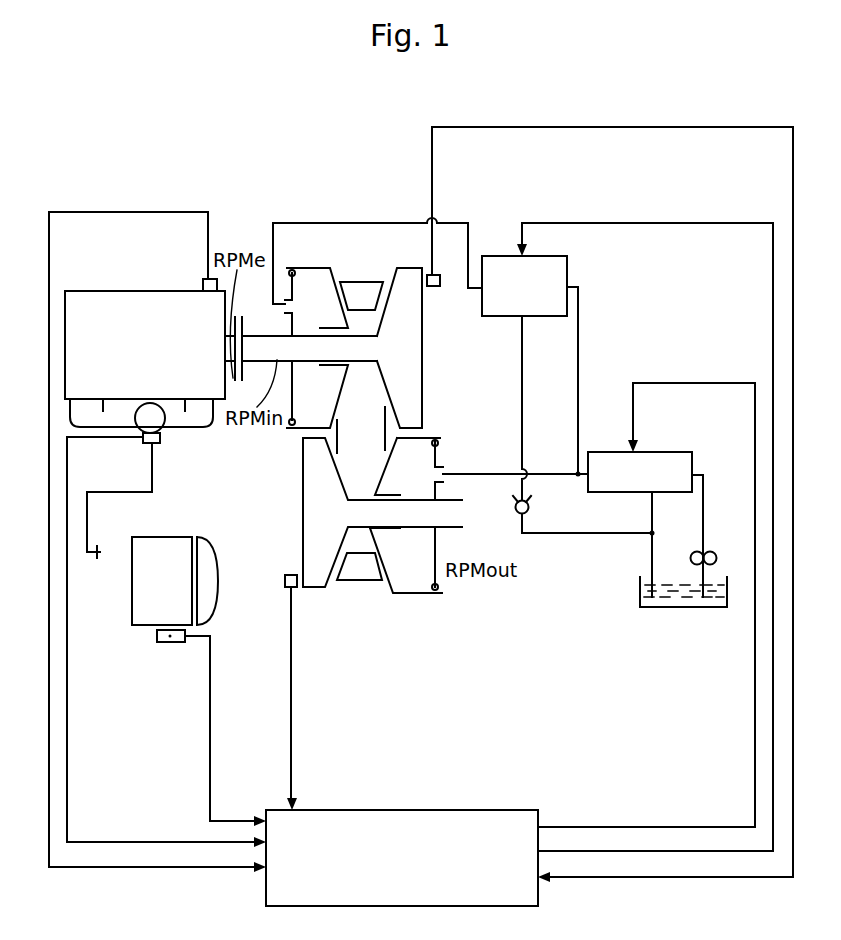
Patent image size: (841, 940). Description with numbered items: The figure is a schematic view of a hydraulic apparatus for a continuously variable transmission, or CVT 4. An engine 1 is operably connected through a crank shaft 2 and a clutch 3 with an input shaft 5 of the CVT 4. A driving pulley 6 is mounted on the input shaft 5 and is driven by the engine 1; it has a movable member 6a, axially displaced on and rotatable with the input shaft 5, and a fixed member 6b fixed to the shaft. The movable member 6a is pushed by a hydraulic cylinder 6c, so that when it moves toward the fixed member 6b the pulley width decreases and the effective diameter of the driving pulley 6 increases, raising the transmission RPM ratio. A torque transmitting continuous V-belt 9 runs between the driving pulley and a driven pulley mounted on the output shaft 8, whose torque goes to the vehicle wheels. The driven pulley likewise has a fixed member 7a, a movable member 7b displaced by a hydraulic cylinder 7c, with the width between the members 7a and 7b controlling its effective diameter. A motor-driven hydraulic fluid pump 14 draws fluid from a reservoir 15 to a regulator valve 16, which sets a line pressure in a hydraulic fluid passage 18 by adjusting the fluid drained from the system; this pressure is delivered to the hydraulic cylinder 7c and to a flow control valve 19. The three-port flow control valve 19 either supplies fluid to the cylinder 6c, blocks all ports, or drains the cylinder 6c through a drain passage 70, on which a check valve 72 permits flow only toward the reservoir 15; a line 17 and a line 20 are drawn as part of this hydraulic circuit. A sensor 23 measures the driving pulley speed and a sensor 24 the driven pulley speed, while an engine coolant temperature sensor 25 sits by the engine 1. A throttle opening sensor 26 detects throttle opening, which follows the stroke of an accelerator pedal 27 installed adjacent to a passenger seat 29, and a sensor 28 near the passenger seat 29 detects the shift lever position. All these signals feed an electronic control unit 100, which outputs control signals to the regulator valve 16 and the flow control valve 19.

The engine 1 is at (120, 302).
The crank shaft 2 is at (233, 371).
The clutch 3 is at (247, 332).
The CVT 4 is at (370, 207).
The input shaft 5 is at (309, 365).
The driving pulley 6 is at (359, 349).
The movable member 6a is at (307, 418).
The fixed member 6b is at (415, 408).
The hydraulic cylinder 6c is at (308, 278).
The fixed member 7a is at (320, 587).
The movable member 7b is at (422, 588).
The hydraulic cylinder 7c is at (440, 452).
The output shaft 8 is at (447, 522).
The V-belt 9 is at (360, 292).
The hydraulic fluid pump 14 is at (717, 558).
The reservoir 15 is at (720, 597).
The regulator valve 16 is at (673, 450).
The drain line 17 is at (648, 505).
The hydraulic fluid passage 18 is at (578, 387).
The flow control valve 19 is at (558, 257).
The oil line to drive pulley 20 is at (453, 220).
The sensor 23 is at (433, 286).
The sensor 24 is at (283, 585).
The engine coolant temperature sensor 25 is at (203, 285).
The throttle opening sensor 26 is at (147, 443).
The accelerator pedal 27 is at (103, 548).
The sensor 28 is at (168, 643).
The passenger seat 29 is at (173, 543).
The drain passage 70 is at (523, 403).
The check valve 72 is at (515, 503).
The electronic control unit 100 is at (468, 810).